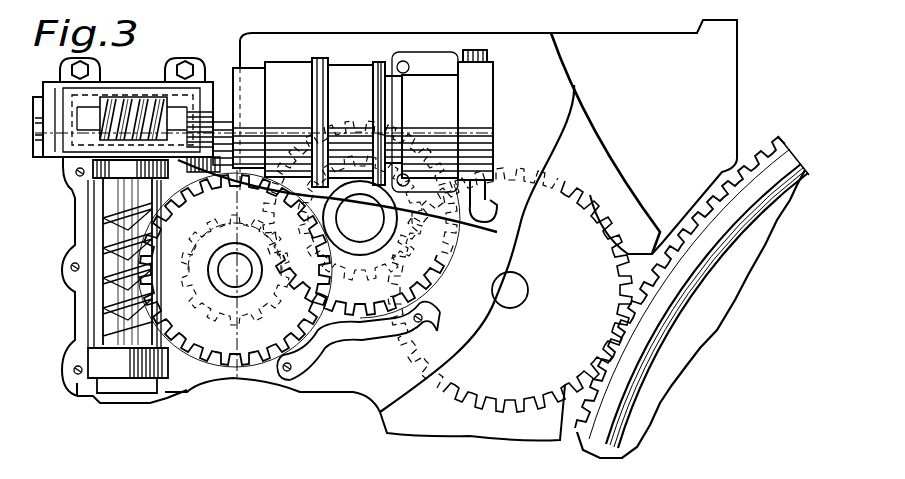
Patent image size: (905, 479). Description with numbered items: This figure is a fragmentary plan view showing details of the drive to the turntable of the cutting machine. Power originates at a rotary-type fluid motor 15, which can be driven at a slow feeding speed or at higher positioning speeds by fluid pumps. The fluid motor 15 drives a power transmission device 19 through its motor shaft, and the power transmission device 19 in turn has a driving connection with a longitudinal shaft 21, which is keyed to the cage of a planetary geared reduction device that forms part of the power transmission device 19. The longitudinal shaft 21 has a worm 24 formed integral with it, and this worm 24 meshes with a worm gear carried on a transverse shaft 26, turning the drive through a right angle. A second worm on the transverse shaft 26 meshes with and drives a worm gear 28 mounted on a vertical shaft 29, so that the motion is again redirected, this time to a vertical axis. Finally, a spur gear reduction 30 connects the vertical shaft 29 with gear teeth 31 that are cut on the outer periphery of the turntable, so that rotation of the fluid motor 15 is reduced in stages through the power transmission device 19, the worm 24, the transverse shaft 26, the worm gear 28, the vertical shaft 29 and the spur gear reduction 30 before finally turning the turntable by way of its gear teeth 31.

The fluid motor 15 is at (437, 80).
The power transmission device 19 is at (340, 63).
The longitudinal shaft 21 is at (175, 110).
The worm 24 is at (127, 100).
The transverse shaft 26 is at (115, 200).
The worm gear 28 is at (192, 363).
The vertical shaft 29 is at (233, 303).
The spur gear reduction 30 is at (357, 307).
The gear teeth 31 is at (575, 445).